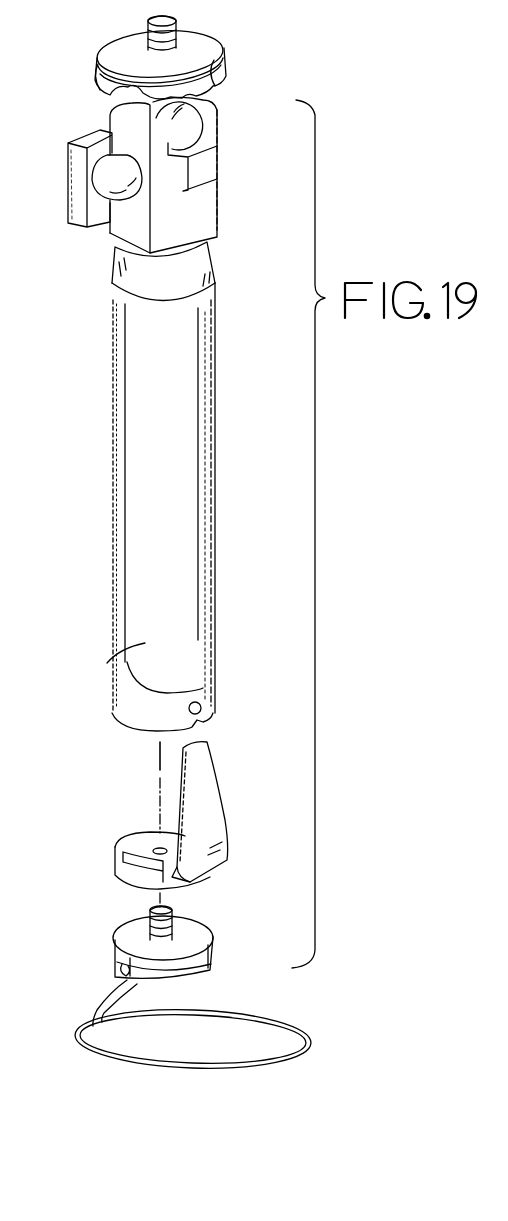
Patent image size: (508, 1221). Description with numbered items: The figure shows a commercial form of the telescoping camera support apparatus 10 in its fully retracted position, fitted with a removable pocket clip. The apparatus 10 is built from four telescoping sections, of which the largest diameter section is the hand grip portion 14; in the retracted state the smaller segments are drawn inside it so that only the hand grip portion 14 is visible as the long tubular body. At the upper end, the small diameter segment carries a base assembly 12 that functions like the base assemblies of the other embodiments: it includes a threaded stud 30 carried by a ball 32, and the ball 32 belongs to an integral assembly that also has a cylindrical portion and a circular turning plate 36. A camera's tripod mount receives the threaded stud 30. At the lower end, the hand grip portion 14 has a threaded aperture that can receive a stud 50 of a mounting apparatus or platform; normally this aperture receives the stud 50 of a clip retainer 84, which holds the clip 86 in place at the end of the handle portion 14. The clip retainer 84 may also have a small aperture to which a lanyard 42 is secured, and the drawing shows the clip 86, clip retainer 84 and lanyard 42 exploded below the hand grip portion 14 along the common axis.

The apparatus 10 is at (98, 543).
The base assembly 12 is at (92, 262).
The hand grip portion 14 is at (107, 663).
The threaded stud 30 is at (133, 30).
The ball 32 is at (186, 145).
The circular turning plate 36 is at (228, 60).
The lanyard 42 is at (170, 1075).
The stud 50 is at (195, 930).
The clip retainer 84 is at (130, 935).
The clip 86 is at (128, 867).